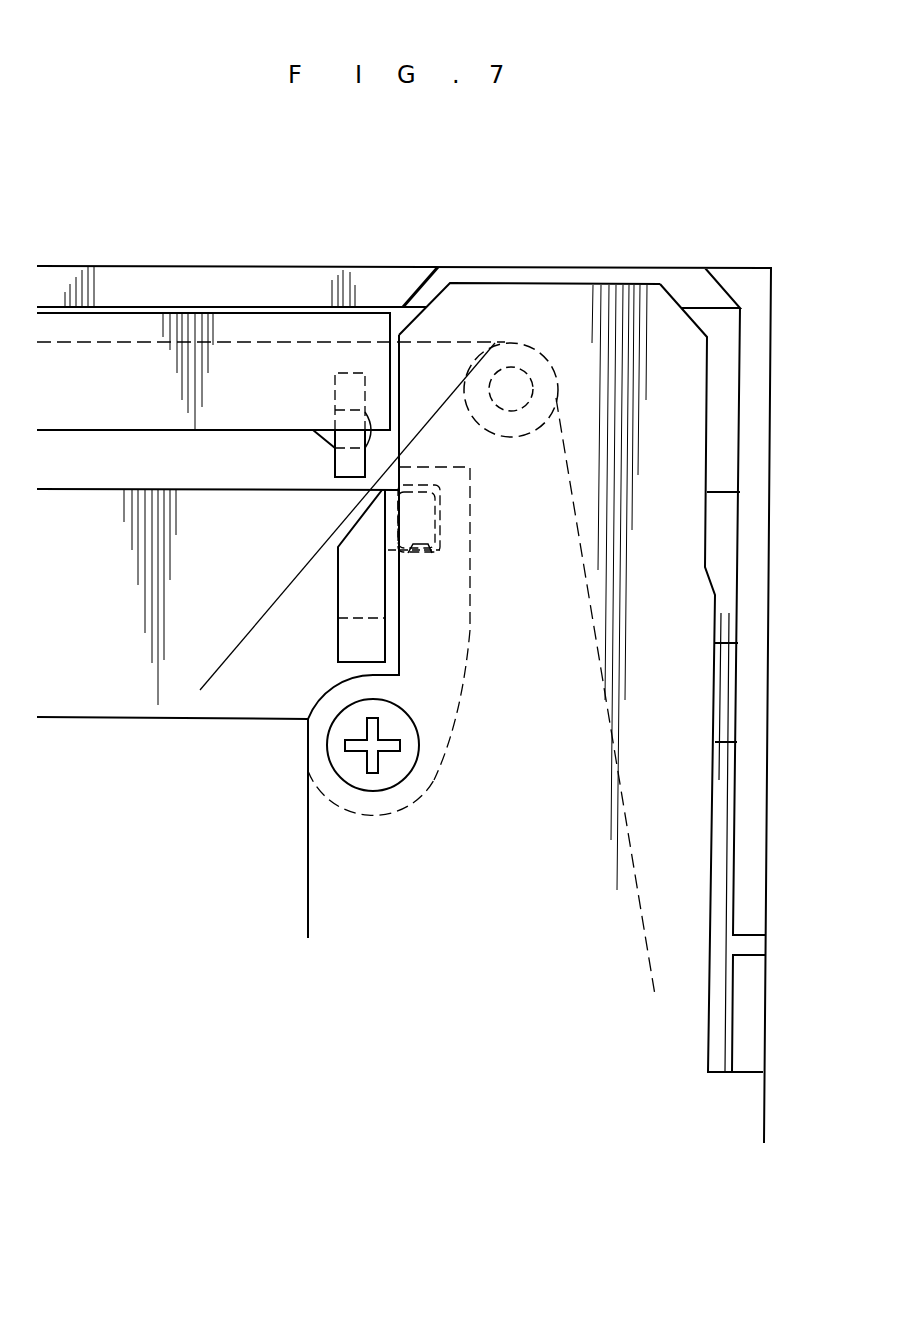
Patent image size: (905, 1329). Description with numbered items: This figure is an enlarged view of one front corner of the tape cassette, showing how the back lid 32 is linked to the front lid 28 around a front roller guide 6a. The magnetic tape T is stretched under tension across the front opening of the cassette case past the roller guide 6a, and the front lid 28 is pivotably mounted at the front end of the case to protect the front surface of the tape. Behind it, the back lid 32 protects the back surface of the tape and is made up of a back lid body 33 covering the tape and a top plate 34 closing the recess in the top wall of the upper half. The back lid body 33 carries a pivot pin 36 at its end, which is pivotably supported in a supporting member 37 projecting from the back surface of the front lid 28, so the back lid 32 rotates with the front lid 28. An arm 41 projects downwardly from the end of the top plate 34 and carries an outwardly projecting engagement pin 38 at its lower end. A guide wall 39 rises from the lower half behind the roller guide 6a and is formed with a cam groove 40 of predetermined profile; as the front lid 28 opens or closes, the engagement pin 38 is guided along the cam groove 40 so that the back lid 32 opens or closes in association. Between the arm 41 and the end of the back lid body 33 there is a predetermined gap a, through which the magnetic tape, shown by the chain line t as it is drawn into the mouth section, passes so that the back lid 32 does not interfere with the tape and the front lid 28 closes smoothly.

The front lid 28 is at (615, 267).
The back lid 32 is at (112, 303).
The back lid body 33 is at (237, 355).
The top plate 34 is at (134, 489).
The pivot pin 36 is at (368, 441).
The supporting member 37 is at (335, 467).
The engagement pin 38 is at (435, 531).
The guide wall 39 is at (470, 498).
The cam groove 40 is at (440, 549).
The arm 41 is at (370, 602).
The roller guide 6a is at (518, 343).
The magnetic tape T is at (317, 340).
The magnetic tape (drawn tape) t is at (249, 632).
The gap a is at (352, 495).